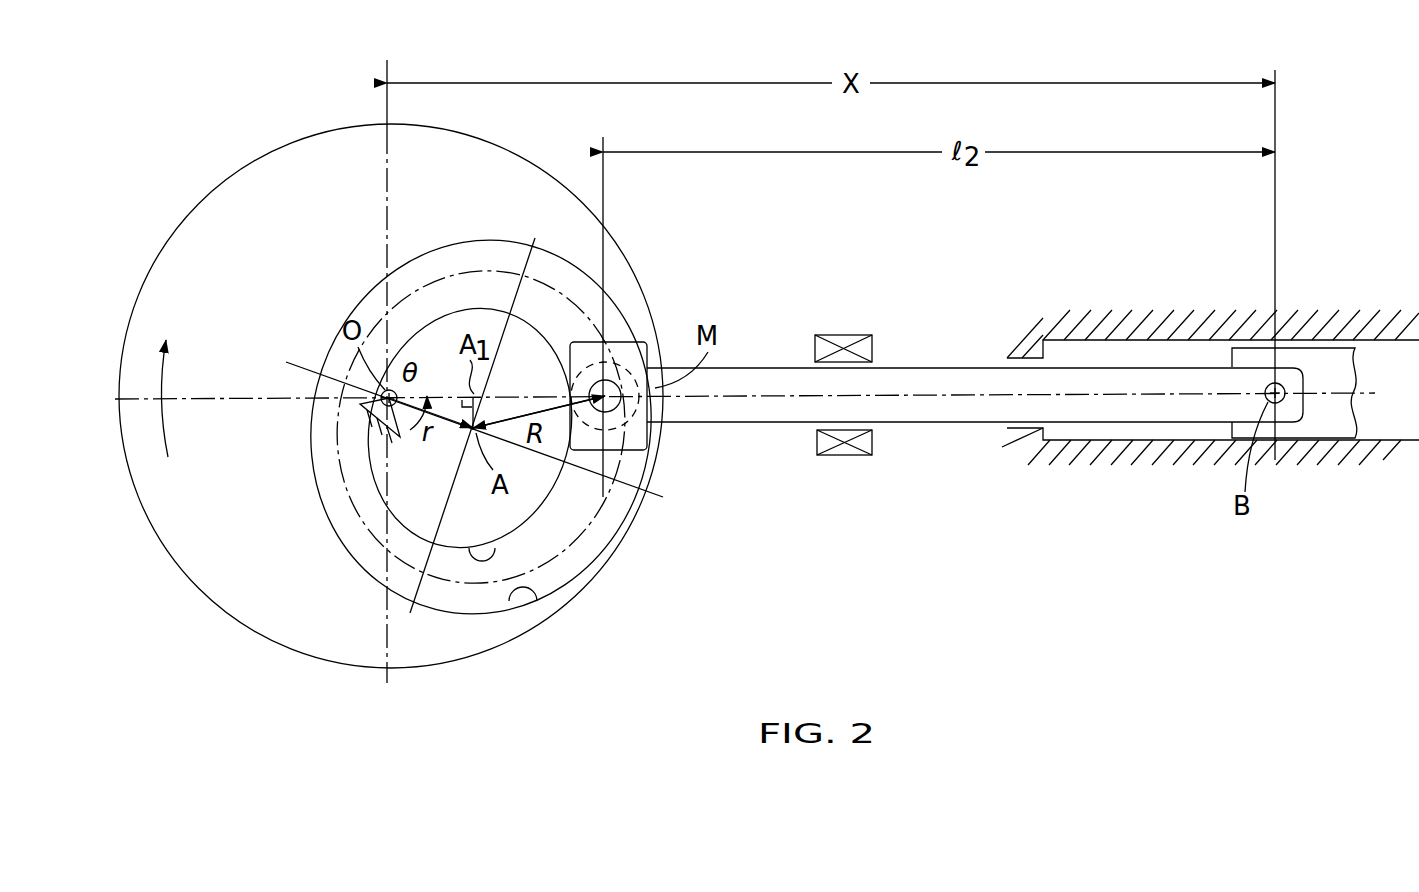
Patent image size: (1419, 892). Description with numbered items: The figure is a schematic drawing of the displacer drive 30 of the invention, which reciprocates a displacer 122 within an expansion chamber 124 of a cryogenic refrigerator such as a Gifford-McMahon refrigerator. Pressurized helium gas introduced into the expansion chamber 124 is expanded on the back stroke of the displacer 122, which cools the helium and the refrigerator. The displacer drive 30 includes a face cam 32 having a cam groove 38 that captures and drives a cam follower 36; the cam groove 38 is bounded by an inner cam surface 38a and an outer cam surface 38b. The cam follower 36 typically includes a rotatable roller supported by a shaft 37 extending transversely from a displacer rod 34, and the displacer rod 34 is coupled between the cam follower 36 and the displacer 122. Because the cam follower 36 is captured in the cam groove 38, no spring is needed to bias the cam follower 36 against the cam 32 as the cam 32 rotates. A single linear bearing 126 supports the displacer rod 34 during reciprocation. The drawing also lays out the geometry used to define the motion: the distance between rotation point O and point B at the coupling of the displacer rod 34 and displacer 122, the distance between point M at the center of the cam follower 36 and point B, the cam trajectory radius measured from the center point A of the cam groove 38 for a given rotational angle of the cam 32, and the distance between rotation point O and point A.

The displacer drive 30 is at (758, 502).
The face cam 32 is at (296, 138).
The displacer rod 34 is at (900, 423).
The cam follower 36 is at (633, 435).
The shaft 37 is at (620, 381).
The cam groove 38 is at (457, 613).
The inner cam surface 38a is at (492, 544).
The outer cam surface 38b is at (537, 589).
The displacer 122 is at (1355, 365).
The expansion chamber 124 is at (1323, 315).
The linear bearing 126 is at (850, 335).